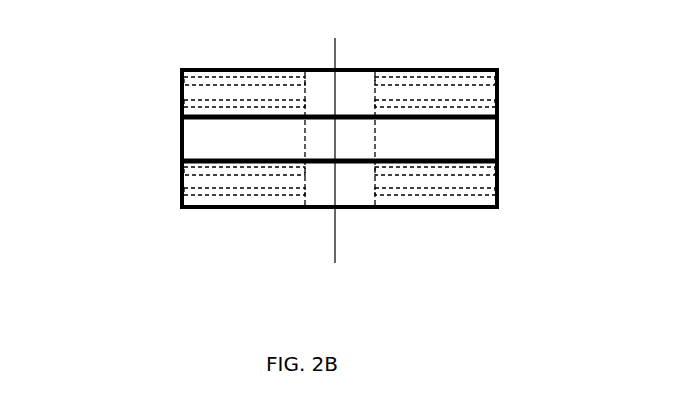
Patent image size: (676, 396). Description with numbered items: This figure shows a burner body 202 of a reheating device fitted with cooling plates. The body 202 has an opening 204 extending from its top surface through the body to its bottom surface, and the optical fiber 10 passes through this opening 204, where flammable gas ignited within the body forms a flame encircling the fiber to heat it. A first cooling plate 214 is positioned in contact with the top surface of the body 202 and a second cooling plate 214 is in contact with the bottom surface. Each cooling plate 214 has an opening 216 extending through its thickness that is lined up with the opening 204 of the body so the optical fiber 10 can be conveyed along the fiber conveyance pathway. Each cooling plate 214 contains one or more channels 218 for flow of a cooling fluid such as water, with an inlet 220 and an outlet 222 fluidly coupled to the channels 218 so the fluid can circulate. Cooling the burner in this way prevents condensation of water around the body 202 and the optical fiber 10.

The optical fiber 10 is at (336, 50).
The burner body 202 is at (498, 140).
The opening 204 is at (314, 136).
The cooling plate 214 is at (498, 93).
The opening 216 is at (317, 82).
The channels 218 is at (485, 79).
The inlet 220 is at (172, 80).
The outlet 222 is at (172, 106).